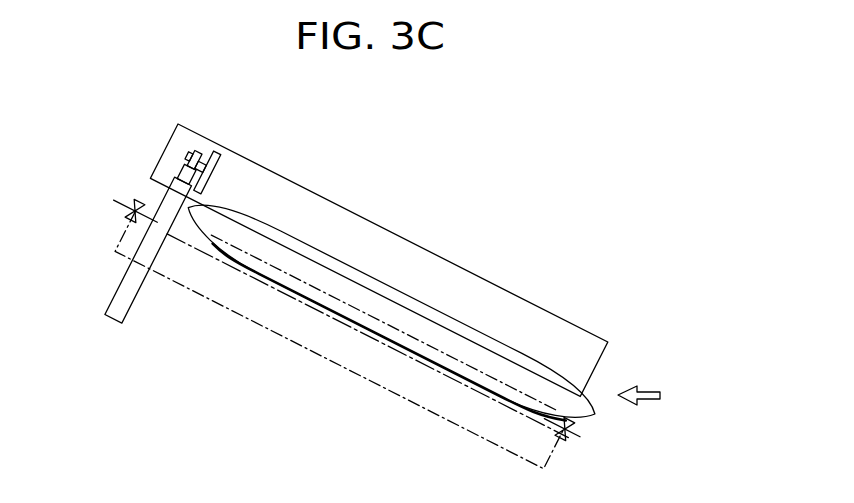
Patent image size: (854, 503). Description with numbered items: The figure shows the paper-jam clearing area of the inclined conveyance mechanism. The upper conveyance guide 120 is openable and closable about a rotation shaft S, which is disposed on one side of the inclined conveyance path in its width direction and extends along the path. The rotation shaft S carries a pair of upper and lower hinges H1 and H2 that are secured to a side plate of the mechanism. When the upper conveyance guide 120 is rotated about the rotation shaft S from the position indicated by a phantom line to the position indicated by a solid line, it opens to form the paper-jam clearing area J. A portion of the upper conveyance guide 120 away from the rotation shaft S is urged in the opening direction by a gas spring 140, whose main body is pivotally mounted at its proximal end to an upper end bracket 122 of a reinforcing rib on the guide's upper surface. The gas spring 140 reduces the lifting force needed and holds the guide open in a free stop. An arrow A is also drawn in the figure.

The upper conveyance guide 120 is at (305, 257).
The upper end bracket 122 is at (216, 171).
The gas spring 140 is at (138, 294).
The paper-jam clearing area J is at (433, 306).
The rotation shaft S is at (490, 397).
The upper hinge H1 is at (128, 215).
The lower hinge H2 is at (568, 440).
The moving direction A is at (650, 397).